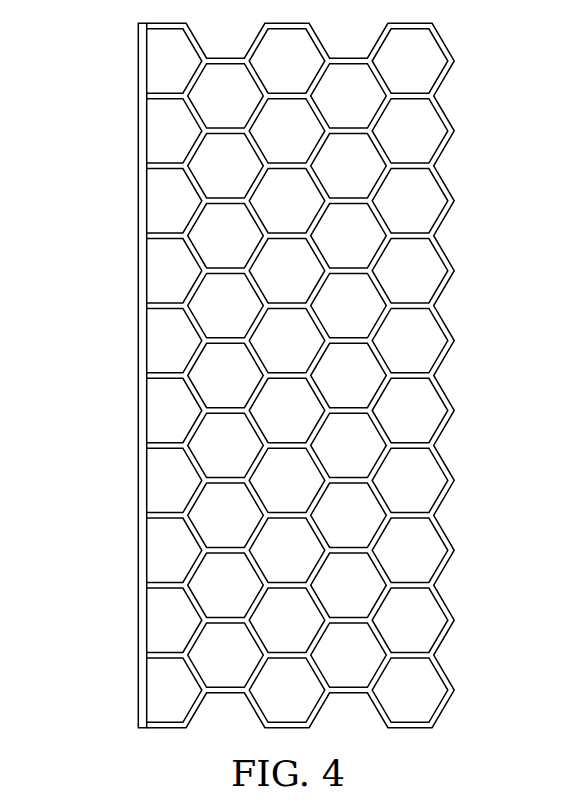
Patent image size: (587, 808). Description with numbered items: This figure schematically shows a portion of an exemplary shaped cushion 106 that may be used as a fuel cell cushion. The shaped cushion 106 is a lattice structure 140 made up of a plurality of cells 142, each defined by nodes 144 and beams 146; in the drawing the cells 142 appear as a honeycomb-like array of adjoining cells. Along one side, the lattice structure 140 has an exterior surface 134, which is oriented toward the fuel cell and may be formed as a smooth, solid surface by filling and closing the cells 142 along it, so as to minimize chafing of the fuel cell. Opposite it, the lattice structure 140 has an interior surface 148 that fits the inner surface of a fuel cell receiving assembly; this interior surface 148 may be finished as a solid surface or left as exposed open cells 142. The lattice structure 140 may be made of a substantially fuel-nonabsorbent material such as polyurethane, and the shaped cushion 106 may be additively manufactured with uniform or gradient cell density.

The shaped cushion 106 is at (108, 195).
The exterior surface 134 is at (137, 373).
The lattice structure 140 is at (456, 572).
The cell 142 is at (370, 390).
The node 144 is at (330, 333).
The beam 146 is at (362, 410).
The interior surface 148 is at (445, 182).